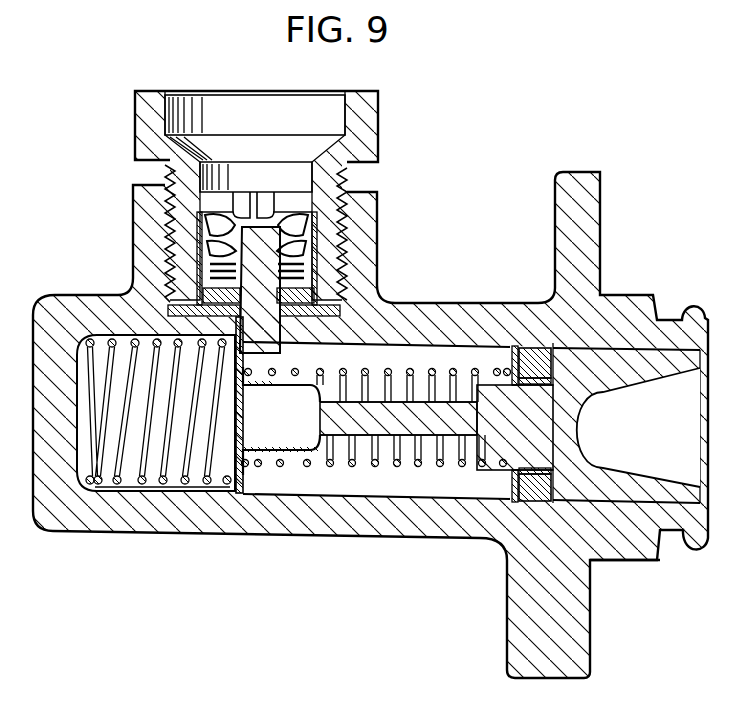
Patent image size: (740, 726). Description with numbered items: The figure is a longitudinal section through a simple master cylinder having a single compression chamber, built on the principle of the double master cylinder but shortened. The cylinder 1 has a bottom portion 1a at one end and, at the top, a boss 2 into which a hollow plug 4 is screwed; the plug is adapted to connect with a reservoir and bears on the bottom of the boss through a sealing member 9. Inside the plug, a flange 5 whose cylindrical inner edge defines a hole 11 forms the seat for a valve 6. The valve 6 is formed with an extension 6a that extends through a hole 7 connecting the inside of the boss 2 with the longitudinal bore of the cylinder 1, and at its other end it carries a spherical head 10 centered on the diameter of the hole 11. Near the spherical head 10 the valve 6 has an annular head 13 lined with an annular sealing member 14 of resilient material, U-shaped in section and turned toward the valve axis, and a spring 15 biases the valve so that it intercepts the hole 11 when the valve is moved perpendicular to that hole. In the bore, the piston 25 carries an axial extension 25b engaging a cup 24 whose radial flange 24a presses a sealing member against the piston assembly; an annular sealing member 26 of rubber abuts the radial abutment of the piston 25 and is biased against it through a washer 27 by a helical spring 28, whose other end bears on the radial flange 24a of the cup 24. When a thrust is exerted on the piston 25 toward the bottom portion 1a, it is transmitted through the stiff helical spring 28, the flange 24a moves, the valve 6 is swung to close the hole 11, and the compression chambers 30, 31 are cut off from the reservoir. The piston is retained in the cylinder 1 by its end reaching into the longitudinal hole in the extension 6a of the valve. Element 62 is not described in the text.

The cylinder body portion 1 is at (652, 317).
The bottom portion 1a is at (60, 432).
The boss 2 is at (373, 228).
The hollow plug 4 is at (372, 146).
The flange 5 is at (218, 196).
The valve 6 is at (245, 258).
The valve extension 6a is at (281, 353).
The hole 7 is at (233, 335).
The sealing member 9 is at (377, 303).
The spherical head 10 is at (276, 192).
The hole 11 is at (253, 196).
The annular head 13 is at (214, 249).
The annular sealing member 14 is at (207, 226).
The spring 15 is at (302, 276).
The cup 24 is at (316, 440).
The radial flange 24a is at (253, 478).
The piston 25 is at (607, 355).
The axial extension 25b is at (412, 425).
The annular sealing member 26 is at (535, 362).
The washer 27 is at (513, 350).
The helical spring 28 is at (434, 368).
The compression chamber 30 is at (470, 490).
The compression chamber 31 is at (153, 485).
The spring seat 62 is at (190, 489).